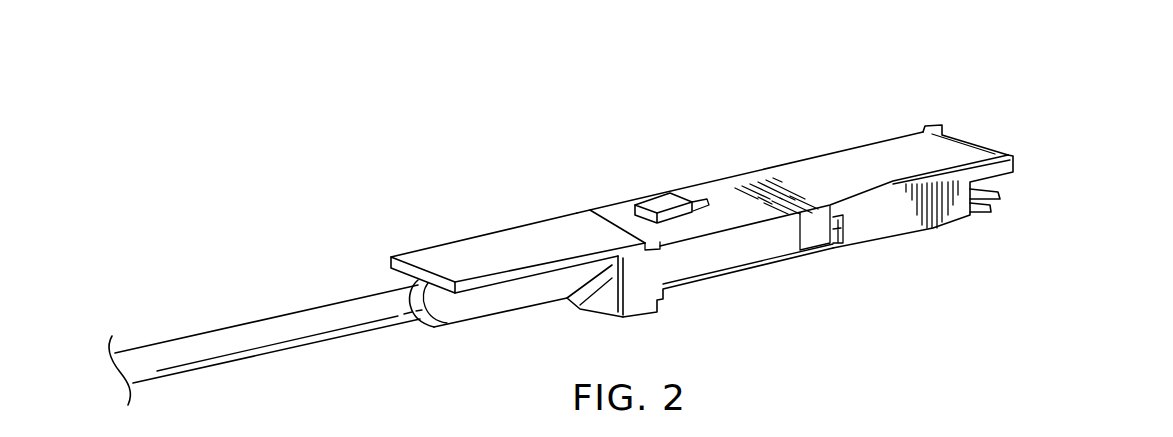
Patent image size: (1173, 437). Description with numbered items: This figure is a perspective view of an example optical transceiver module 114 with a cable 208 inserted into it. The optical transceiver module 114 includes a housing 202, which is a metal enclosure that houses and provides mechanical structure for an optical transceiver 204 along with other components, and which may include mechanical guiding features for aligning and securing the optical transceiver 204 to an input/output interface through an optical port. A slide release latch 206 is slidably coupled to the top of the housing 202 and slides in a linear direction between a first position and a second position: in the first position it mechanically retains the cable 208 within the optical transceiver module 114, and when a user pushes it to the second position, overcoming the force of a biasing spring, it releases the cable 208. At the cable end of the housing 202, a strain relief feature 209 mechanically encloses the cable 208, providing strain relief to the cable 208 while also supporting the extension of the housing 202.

The optical transceiver module 114 is at (580, 84).
The housing 202 is at (818, 153).
The optical transceiver 204 is at (999, 194).
The slide release latch 206 is at (657, 199).
The cable 208 is at (246, 320).
The strain relief feature 209 is at (477, 305).